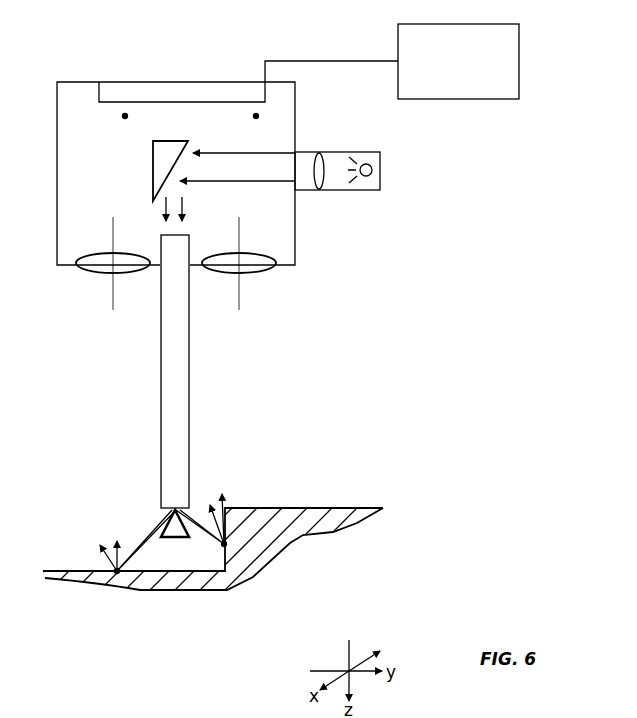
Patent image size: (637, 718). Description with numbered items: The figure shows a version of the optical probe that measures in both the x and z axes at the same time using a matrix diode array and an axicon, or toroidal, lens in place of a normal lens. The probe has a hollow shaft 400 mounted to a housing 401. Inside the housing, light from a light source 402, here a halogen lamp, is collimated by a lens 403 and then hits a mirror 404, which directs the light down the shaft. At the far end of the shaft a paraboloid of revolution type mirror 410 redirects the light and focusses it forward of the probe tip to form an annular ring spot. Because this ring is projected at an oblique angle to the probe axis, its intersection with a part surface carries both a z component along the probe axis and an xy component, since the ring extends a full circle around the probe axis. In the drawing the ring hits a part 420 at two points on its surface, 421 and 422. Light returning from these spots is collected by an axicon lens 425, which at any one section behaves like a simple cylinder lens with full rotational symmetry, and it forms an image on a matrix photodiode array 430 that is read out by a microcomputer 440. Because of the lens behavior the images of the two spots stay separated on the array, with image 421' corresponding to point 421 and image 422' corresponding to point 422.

The hollow shaft 400 is at (189, 375).
The housing 401 is at (295, 232).
The light source 402 is at (372, 170).
The lens 403 is at (319, 153).
The mirror 404 is at (153, 168).
The paraboloid of revolution type mirror 410 is at (176, 537).
The part 420 is at (337, 520).
The point on part surface 421 is at (92, 587).
The point on part surface 422 is at (257, 546).
The image of point 421 421' is at (99, 122).
The image of point 422 422' is at (298, 114).
The axicon lens 425 is at (85, 268).
The matrix photodiode array 430 is at (115, 92).
The microcomputer 440 is at (519, 61).